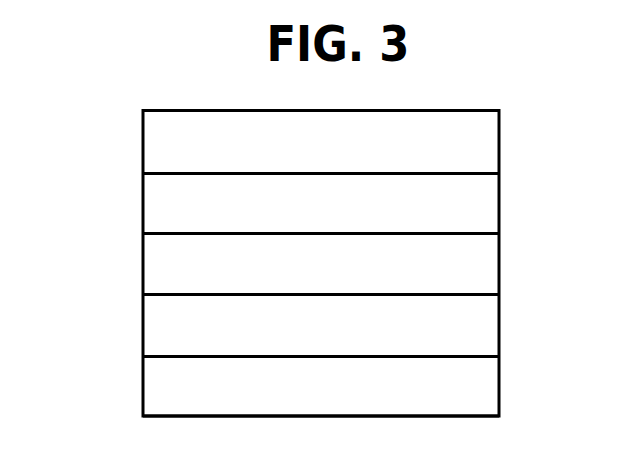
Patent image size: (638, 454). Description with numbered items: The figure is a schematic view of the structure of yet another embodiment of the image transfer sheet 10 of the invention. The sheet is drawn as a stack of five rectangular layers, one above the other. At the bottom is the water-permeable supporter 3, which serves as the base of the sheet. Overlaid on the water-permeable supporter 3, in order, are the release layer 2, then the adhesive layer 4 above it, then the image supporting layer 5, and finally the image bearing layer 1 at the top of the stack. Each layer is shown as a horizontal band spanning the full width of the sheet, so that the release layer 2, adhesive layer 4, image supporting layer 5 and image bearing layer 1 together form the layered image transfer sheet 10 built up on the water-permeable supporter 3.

The image transfer sheet 10 is at (132, 268).
The image bearing layer 1 is at (487, 150).
The image supporting layer 5 is at (487, 210).
The adhesive layer 4 is at (487, 264).
The release layer 2 is at (487, 327).
The water-permeable supporter 3 is at (490, 394).